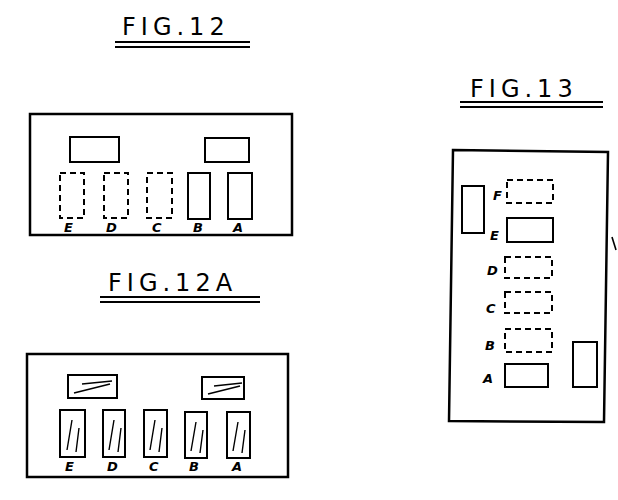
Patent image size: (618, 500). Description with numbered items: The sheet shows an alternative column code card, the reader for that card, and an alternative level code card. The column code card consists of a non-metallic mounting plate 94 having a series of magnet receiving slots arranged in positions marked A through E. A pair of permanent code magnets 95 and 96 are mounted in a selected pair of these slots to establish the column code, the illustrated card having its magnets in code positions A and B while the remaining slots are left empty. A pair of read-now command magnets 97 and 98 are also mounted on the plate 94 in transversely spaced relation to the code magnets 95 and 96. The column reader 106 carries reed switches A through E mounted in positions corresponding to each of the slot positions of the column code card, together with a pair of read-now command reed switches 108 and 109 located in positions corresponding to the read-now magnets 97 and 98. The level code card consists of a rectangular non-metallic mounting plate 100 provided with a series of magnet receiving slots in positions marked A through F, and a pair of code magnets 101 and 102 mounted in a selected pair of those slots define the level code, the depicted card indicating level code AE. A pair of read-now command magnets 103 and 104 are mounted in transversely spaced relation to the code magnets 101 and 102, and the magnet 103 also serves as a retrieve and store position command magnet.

In FIG. 12, the mounting plate 94 is at (282, 158).
In FIG. 12, the permanent code magnet 95 is at (252, 198).
In FIG. 12, the permanent code magnet 96 is at (210, 212).
In FIG. 12, the read-now command magnet 97 is at (232, 138).
In FIG. 12, the read-now command magnet 98 is at (97, 137).
In FIG. 12A, the column reader 106 is at (278, 408).
In FIG. 12A, the read-now command reed switch 108 is at (227, 376).
In FIG. 12A, the read-now command reed switch 109 is at (95, 374).
In FIG. 13, the mounting plate 100 is at (470, 424).
In FIG. 13, the code magnet 101 is at (528, 388).
In FIG. 13, the code magnet 102 is at (553, 228).
In FIG. 13, the read-now command magnet 103 is at (585, 342).
In FIG. 13, the read-now command magnet 104 is at (467, 214).